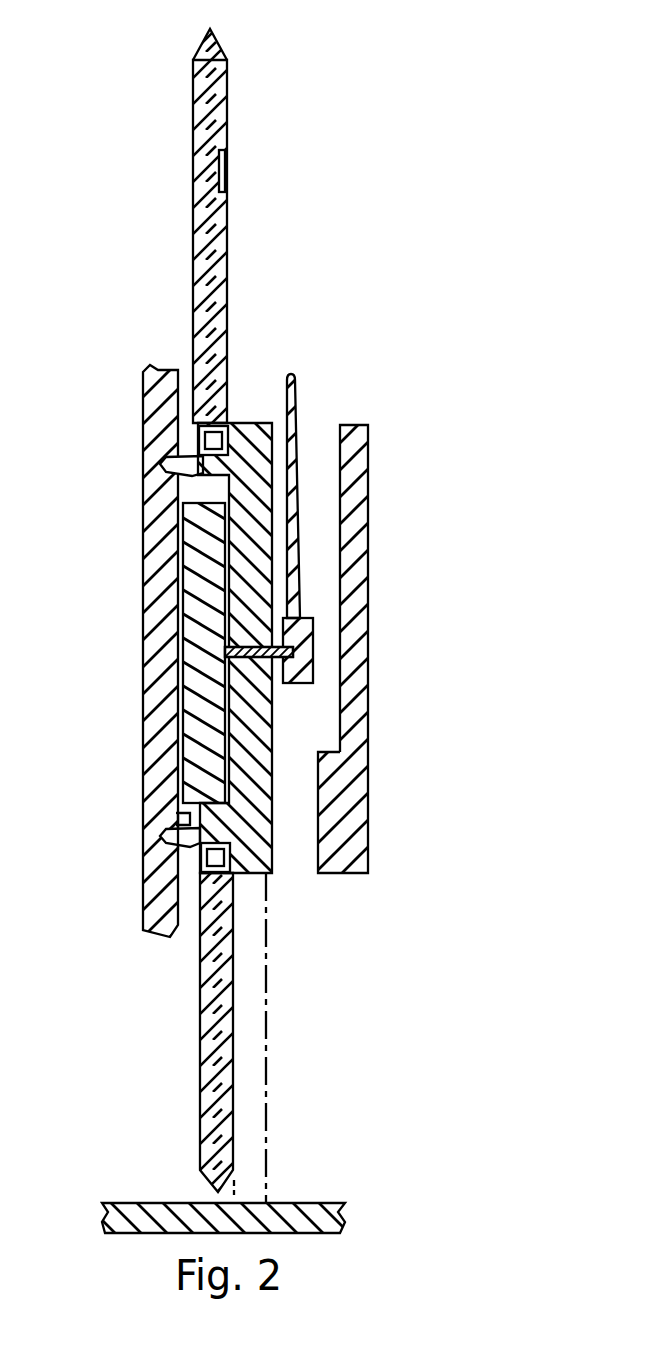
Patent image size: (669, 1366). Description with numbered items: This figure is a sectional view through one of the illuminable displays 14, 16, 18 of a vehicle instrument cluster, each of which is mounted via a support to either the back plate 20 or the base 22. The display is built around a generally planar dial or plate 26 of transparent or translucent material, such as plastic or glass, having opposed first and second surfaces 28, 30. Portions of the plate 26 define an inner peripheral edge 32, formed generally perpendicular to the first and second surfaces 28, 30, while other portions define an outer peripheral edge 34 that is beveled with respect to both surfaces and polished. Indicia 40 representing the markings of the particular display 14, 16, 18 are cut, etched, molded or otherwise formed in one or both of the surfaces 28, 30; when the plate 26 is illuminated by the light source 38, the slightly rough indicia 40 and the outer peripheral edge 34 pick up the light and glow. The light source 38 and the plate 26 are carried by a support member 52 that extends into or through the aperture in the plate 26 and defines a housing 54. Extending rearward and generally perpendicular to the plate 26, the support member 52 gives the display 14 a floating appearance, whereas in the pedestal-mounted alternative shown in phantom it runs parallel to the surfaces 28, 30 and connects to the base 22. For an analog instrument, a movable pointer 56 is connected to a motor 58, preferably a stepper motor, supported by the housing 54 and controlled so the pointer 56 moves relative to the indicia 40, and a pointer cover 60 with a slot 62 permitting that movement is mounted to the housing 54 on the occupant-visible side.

The center display 14 is at (322, 130).
The left display 16 is at (257, 622).
The right display 18 is at (257, 622).
The back plate 20 is at (156, 509).
The base 22 is at (293, 1216).
The plate 26 is at (232, 108).
The first surface 28 is at (229, 262).
The second surface 30 is at (196, 213).
The inner peripheral edge 32 is at (234, 878).
The outer peripheral edge 34 is at (203, 51).
The light source 38 is at (186, 882).
The indicia 40 is at (226, 167).
The support member 52 is at (190, 462).
The housing 54 is at (248, 738).
The pointer 56 is at (297, 423).
The motor 58 is at (196, 675).
The pointer cover 60 is at (368, 810).
The slot 62 is at (328, 530).